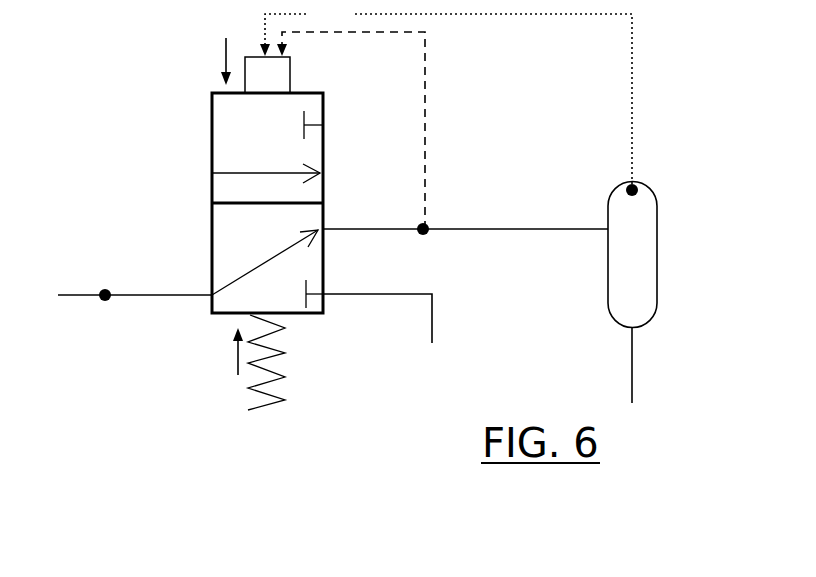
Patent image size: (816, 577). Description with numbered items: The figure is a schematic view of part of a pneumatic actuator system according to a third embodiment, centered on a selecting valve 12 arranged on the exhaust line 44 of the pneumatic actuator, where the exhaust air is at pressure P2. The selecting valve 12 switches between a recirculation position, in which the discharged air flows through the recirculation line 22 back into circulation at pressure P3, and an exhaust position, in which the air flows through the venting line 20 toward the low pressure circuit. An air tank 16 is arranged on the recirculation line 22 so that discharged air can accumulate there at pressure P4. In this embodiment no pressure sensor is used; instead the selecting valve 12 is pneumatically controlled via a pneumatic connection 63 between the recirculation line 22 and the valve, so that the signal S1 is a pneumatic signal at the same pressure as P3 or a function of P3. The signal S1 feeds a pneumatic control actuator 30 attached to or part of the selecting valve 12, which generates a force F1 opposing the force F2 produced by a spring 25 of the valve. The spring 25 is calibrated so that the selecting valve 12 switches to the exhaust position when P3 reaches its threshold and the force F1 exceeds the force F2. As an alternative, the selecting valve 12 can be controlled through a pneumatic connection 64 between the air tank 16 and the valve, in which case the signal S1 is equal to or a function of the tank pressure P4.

The selecting valve 12 is at (158, 192).
The air tank 16 is at (632, 255).
The venting line 20 is at (387, 335).
The recirculation line 22 is at (630, 382).
The spring 25 is at (282, 362).
The pneumatic control actuator 30 is at (285, 67).
The exhaust line 44 is at (115, 295).
The pneumatic connection 63 is at (424, 92).
The pneumatic connection 64 is at (632, 98).
The signal S1 is at (331, 14).
The pressure in the exhaust line P2 is at (110, 281).
The pressure of the recirculated air P3 is at (438, 218).
The pressure in the air tank P4 is at (645, 178).
The force F1 is at (208, 61).
The force F2 is at (221, 352).